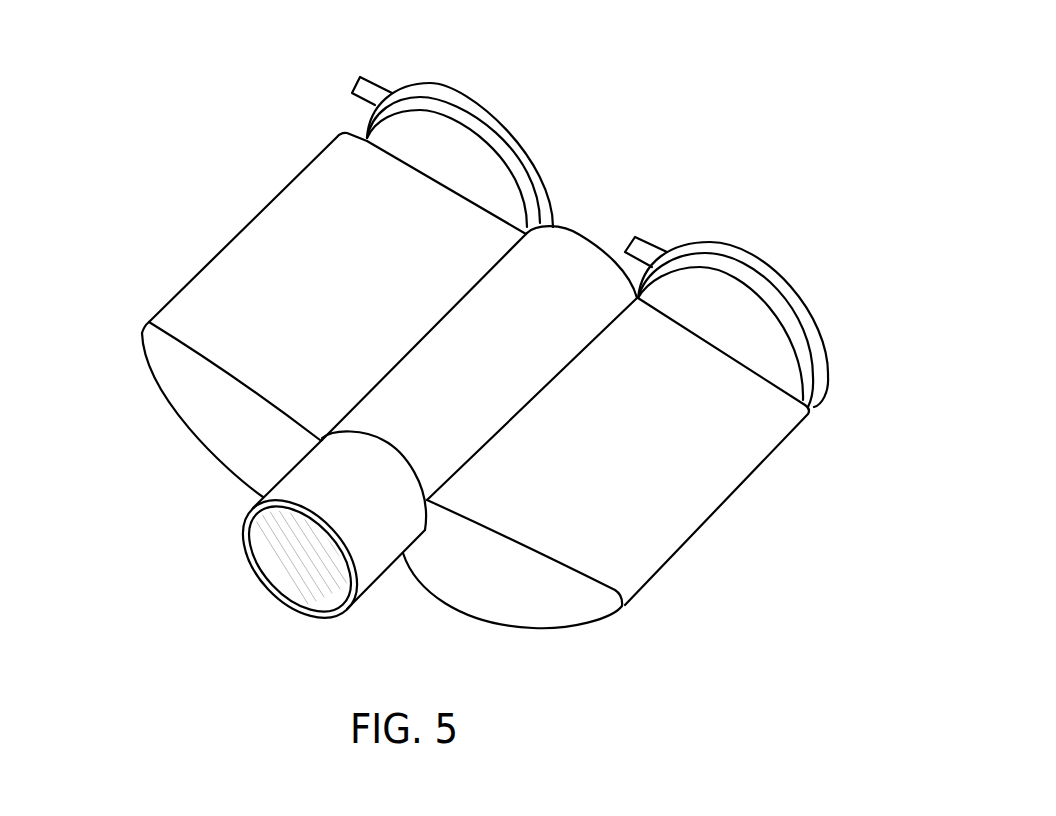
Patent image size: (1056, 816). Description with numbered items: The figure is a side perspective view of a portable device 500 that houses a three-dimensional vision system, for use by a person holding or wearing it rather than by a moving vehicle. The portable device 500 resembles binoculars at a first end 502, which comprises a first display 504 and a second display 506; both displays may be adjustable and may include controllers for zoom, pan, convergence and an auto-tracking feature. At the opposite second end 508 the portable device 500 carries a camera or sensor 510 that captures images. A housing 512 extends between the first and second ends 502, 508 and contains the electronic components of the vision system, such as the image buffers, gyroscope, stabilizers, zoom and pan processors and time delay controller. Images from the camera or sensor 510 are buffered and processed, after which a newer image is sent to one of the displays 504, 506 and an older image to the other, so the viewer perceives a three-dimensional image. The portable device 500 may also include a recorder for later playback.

The portable device 500 is at (588, 344).
The first end 502 is at (578, 230).
The first display 504 is at (733, 257).
The second display 506 is at (467, 103).
The second end 508 is at (388, 578).
The camera or sensor 510 is at (270, 568).
The housing 512 is at (722, 490).